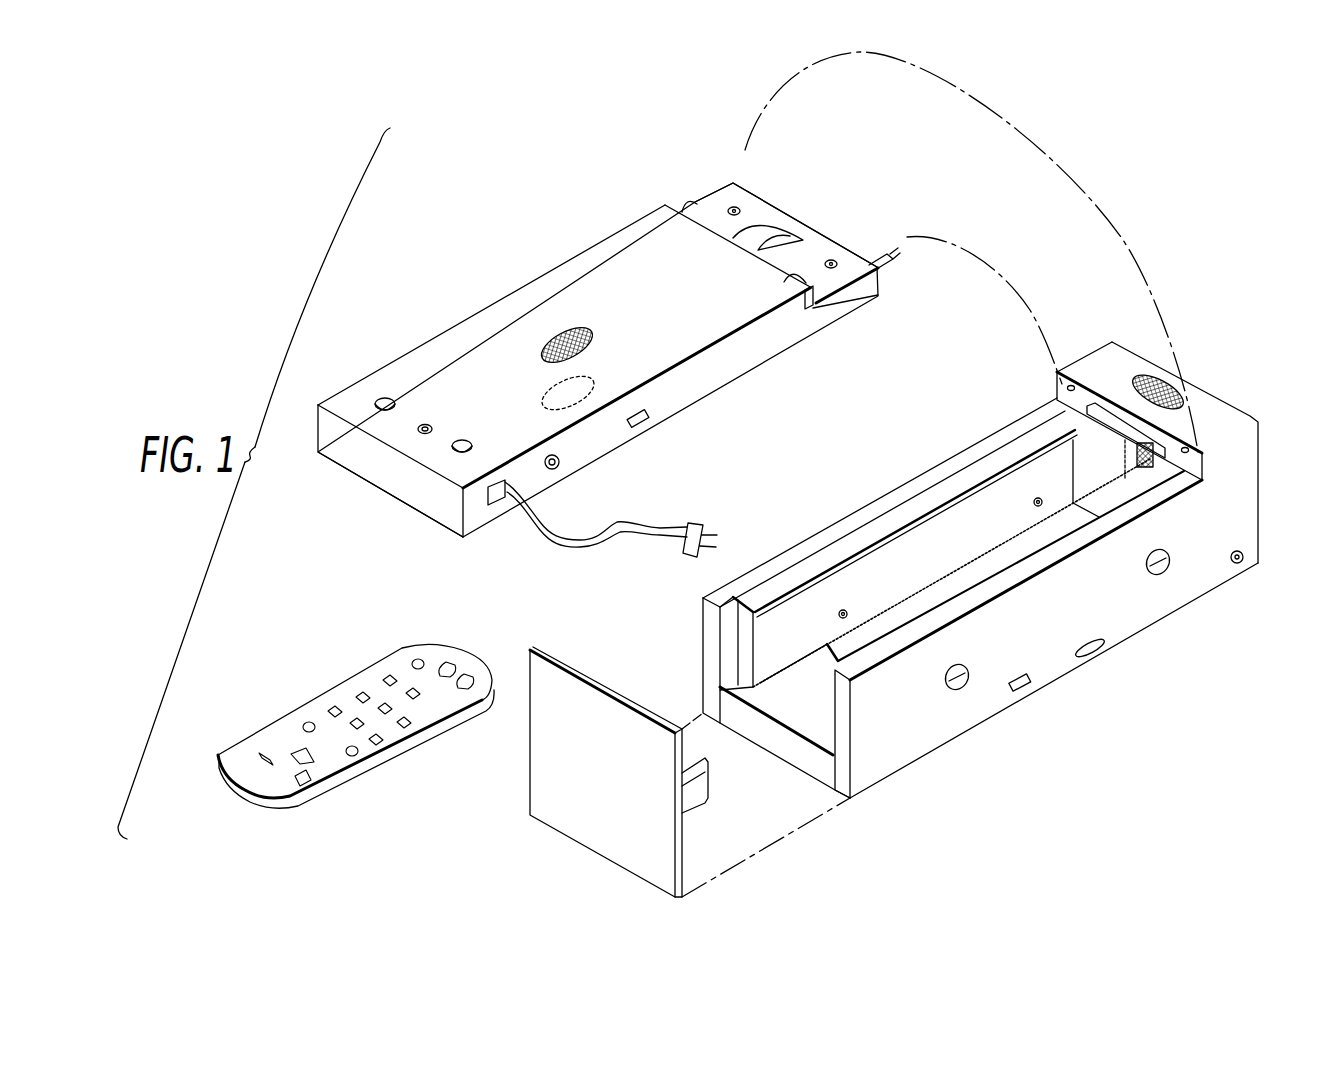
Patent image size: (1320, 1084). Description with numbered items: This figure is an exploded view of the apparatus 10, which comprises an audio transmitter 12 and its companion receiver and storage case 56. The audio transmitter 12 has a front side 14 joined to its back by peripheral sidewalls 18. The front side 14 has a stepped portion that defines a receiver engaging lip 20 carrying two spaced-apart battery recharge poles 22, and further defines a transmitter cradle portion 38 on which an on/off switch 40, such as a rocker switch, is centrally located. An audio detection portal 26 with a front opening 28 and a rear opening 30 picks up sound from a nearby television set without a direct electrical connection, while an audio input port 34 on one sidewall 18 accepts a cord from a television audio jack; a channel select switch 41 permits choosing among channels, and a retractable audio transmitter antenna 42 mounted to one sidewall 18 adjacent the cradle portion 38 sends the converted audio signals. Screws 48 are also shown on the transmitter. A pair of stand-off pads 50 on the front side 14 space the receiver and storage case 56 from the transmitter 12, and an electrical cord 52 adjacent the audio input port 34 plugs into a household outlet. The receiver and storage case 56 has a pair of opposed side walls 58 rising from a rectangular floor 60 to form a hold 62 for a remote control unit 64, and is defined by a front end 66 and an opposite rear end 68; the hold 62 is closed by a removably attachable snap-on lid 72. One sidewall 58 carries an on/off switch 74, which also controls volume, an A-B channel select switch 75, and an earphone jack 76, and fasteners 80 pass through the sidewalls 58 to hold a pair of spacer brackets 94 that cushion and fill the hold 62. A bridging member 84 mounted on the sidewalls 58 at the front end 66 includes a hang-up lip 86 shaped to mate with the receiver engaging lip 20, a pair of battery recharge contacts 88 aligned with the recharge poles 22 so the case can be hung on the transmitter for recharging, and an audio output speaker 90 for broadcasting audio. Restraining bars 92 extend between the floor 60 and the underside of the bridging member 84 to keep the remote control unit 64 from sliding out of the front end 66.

The apparatus 10 is at (1125, 204).
The audio transmitter 12 is at (733, 400).
The front side 14 is at (553, 285).
The peripheral sidewalls 18 is at (365, 462).
The receiver engaging lip 20 is at (818, 303).
The battery recharge poles 22 is at (692, 205).
The audio detection portal 26 is at (563, 332).
The front opening 28 is at (550, 344).
The rear opening 30 is at (627, 440).
The audio input port 34 is at (553, 470).
The transmitter cradle portion 38 is at (750, 193).
The on/off switch 40 is at (781, 236).
The channel select switch 41 is at (652, 422).
The retractable audio transmitter antenna 42 is at (881, 256).
The screw 48 is at (732, 206).
The stand-off pads 50 is at (385, 402).
The electrical cord 52 is at (568, 548).
The receiver and storage case 56 is at (1070, 723).
The side walls 58 is at (888, 748).
The floor 60 is at (783, 700).
The hold 62 is at (828, 728).
The remote control unit 64 is at (222, 752).
The front end 66 is at (1218, 368).
The rear end 68 is at (873, 797).
The snap-on lid 72 is at (563, 808).
The on/off switch 74 is at (1095, 655).
The channel select switch 75 is at (1020, 695).
The earphone jack 76 is at (1246, 556).
The fasteners 80 is at (1158, 568).
The bridging member 84 is at (1092, 352).
The hang-up lip 86 is at (1145, 447).
The battery recharge contacts 88 is at (1068, 388).
The audio output speaker 90 is at (1152, 380).
The restraining bars 92 is at (1130, 458).
The spacer brackets 94 is at (745, 663).